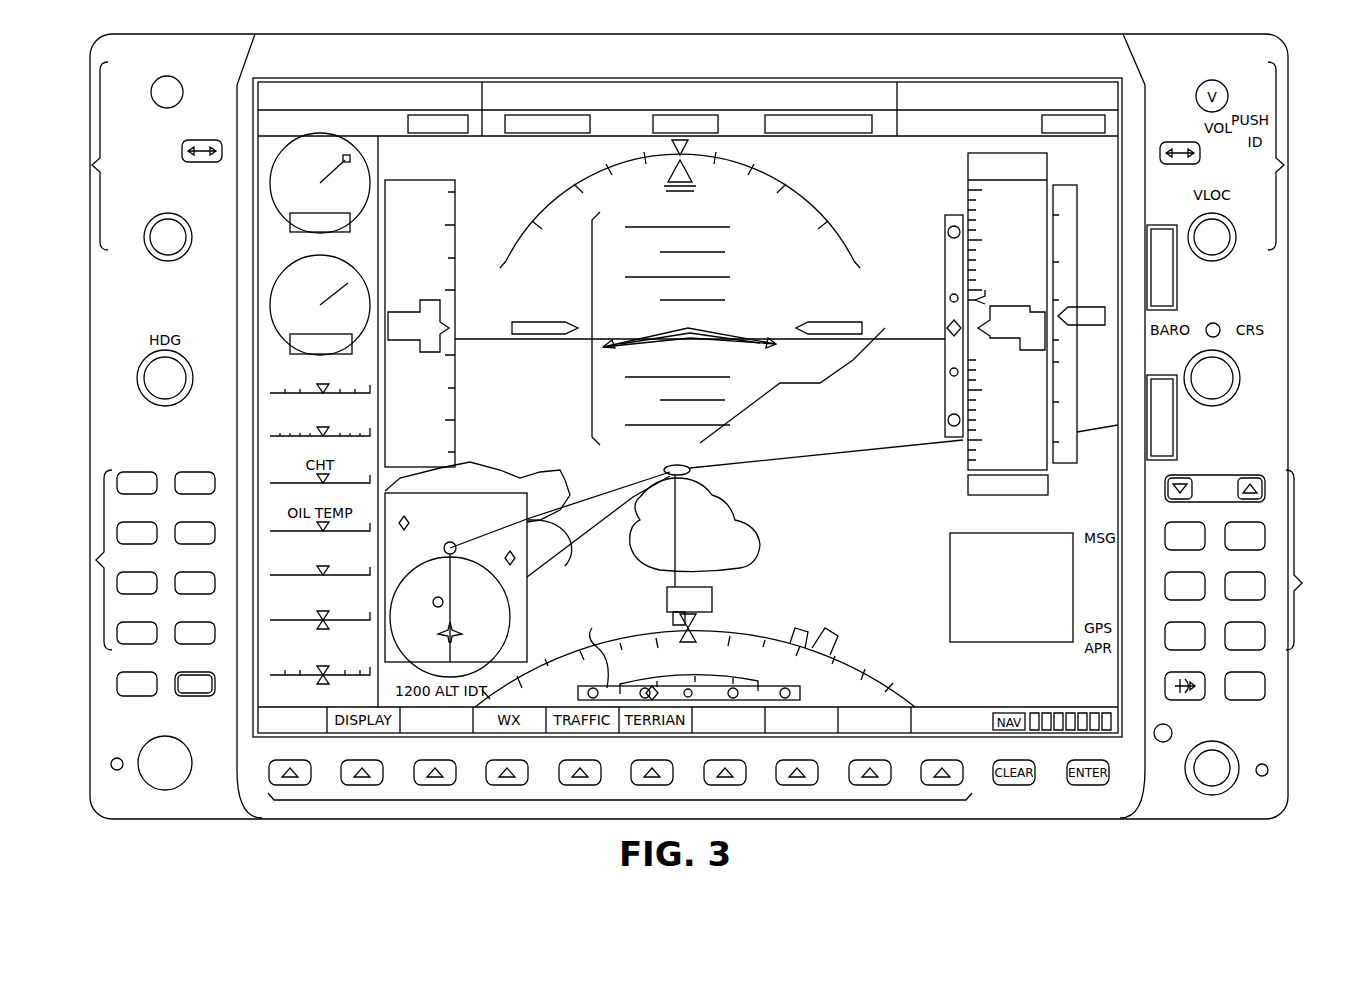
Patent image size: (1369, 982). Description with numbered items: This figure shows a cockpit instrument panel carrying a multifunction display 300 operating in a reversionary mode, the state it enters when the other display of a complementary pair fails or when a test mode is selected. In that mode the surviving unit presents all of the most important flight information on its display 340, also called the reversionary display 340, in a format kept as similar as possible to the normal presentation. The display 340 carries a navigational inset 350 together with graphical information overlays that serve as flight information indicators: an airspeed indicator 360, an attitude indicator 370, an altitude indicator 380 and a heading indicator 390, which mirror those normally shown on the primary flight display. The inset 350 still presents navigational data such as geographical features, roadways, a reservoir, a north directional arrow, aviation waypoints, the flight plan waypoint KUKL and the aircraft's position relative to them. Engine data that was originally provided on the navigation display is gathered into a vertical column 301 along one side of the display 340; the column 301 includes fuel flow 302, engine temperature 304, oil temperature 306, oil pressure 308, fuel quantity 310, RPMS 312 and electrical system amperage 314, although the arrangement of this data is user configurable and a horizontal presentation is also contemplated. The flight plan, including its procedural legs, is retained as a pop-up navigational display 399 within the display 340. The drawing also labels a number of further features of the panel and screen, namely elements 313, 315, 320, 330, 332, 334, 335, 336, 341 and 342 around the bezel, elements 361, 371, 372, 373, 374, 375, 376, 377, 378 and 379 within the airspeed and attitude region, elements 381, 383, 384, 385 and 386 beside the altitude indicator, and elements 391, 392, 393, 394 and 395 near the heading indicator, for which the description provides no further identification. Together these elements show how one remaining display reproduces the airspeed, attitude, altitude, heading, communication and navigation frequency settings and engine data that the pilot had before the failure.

The multifunction display 300 is at (1300, 70).
The vertical column 301 is at (895, 40).
The fuel flow 302 is at (270, 388).
The engine temperature 304 is at (362, 432).
The oil temperature 306 is at (390, 492).
The oil pressure 308 is at (368, 572).
The fuel quantity 310 is at (368, 668).
The RPMS 312 is at (434, 133).
The VLOC radio display 313 is at (1025, 82).
The electrical system amperage 314 is at (362, 620).
The GPS control knob 315 is at (1233, 745).
The COM radio controls 320 is at (90, 165).
The transponder keypad 330 is at (94, 560).
The transponder knob 332 is at (147, 782).
The VFR key 334 is at (137, 696).
The navigation function keys 335 is at (1304, 583).
The IDENT key 336 is at (195, 697).
The display 340 is at (800, 507).
The inset softkey 341 is at (412, 708).
The radio status header 342 is at (563, 66).
The navigational inset 350 is at (438, 524).
The airspeed indicator 360 is at (466, 258).
The airspeed pointer 361 is at (455, 348).
The attitude indicator 370 is at (538, 188).
The roll scale 371 is at (815, 198).
The roll pointer 372 is at (700, 150).
The slip/skid indicator 373 is at (676, 184).
The pitch ladder 374 is at (590, 362).
The flight director wing bars 375 is at (542, 320).
The aircraft symbol 376 is at (745, 336).
The synthetic terrain horizon 377 is at (902, 344).
The map terrain outline 378 is at (548, 480).
The flight plan course line 379 is at (663, 470).
The altitude indicator 380 is at (995, 248).
The vertical deviation indicator 381 is at (945, 300).
The vertical speed tape 383 is at (1060, 245).
The vertical speed pointer 384 is at (1090, 305).
The altitude pointer 385 is at (968, 160).
The barometric setting 386 is at (966, 484).
The heading indicator 390 is at (860, 664).
The bearing pointer 391 is at (822, 640).
The heading bug 392 is at (700, 628).
The heading readout 393 is at (666, 598).
The course deviation indicator 394 is at (583, 649).
The weather/cloud depiction 395 is at (684, 547).
The pop-up navigational display 399 is at (1013, 644).